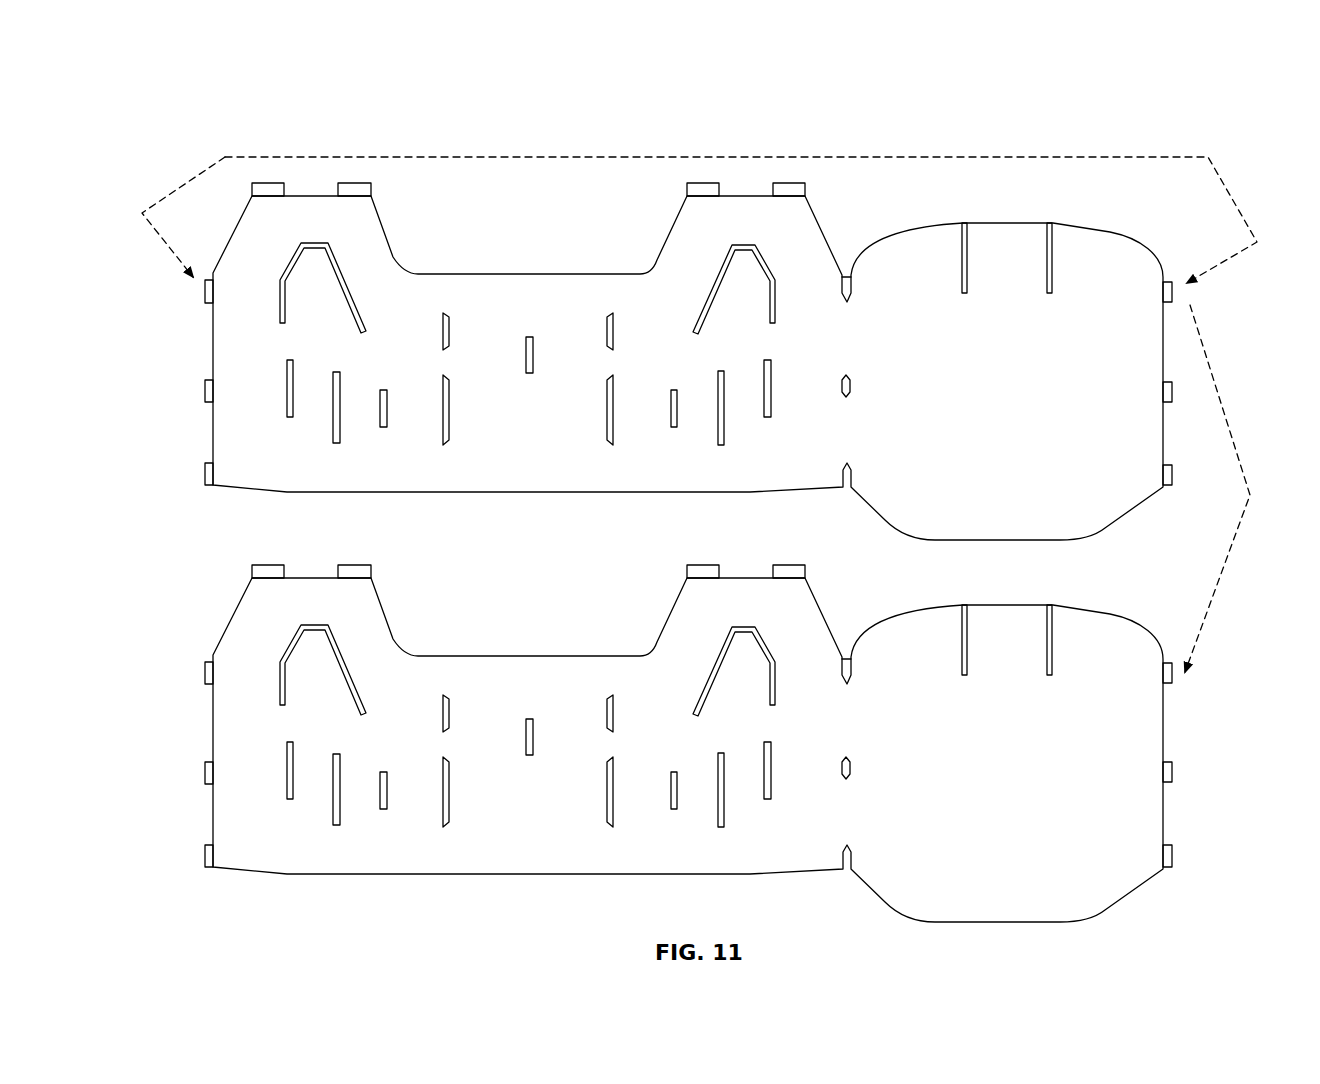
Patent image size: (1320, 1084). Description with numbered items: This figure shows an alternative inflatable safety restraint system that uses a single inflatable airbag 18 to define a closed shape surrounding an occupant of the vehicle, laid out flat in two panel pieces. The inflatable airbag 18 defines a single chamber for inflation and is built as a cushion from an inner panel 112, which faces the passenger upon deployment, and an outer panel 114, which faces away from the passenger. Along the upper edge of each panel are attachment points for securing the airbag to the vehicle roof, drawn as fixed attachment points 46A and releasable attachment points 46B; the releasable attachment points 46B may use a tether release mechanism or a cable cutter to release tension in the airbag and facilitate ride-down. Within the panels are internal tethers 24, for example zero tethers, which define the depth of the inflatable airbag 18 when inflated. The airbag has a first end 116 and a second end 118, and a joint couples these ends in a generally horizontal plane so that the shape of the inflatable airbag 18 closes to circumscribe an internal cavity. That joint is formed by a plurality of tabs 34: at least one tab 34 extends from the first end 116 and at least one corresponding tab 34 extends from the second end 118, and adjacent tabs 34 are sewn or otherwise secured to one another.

The inflatable airbag 18 is at (1142, 78).
The internal tethers 24 is at (968, 250).
The tab 34 is at (1172, 856).
The fixed attachment points 46A is at (354, 190).
The releasable attachment points 46B is at (268, 190).
The inner panel 112 is at (213, 433).
The outer panel 114 is at (213, 725).
The first end 116 is at (213, 318).
The second end 118 is at (1175, 365).